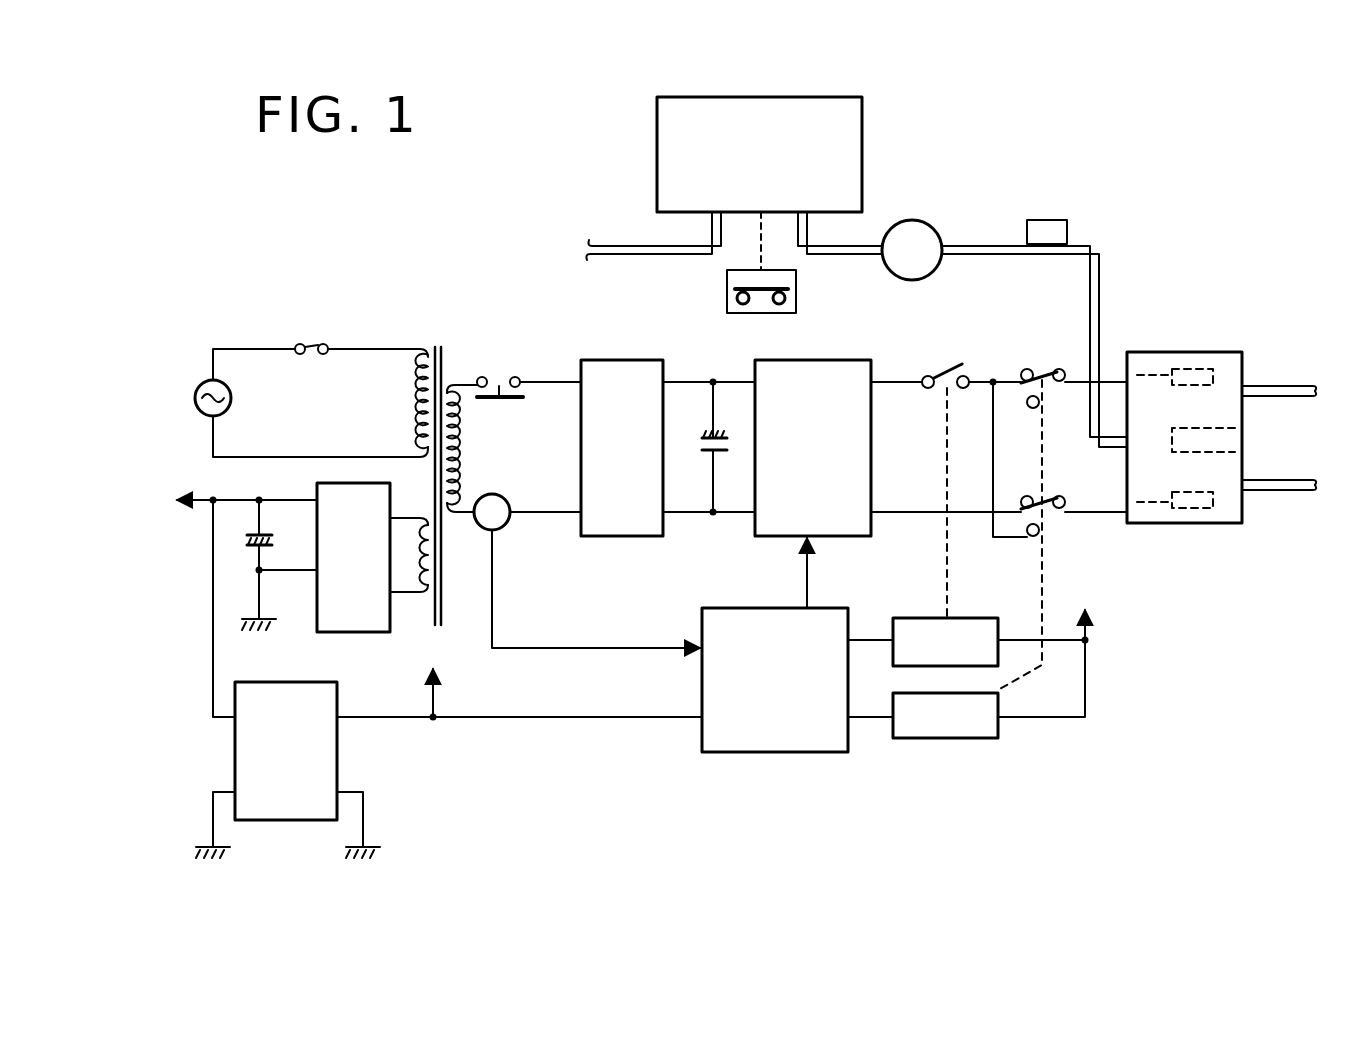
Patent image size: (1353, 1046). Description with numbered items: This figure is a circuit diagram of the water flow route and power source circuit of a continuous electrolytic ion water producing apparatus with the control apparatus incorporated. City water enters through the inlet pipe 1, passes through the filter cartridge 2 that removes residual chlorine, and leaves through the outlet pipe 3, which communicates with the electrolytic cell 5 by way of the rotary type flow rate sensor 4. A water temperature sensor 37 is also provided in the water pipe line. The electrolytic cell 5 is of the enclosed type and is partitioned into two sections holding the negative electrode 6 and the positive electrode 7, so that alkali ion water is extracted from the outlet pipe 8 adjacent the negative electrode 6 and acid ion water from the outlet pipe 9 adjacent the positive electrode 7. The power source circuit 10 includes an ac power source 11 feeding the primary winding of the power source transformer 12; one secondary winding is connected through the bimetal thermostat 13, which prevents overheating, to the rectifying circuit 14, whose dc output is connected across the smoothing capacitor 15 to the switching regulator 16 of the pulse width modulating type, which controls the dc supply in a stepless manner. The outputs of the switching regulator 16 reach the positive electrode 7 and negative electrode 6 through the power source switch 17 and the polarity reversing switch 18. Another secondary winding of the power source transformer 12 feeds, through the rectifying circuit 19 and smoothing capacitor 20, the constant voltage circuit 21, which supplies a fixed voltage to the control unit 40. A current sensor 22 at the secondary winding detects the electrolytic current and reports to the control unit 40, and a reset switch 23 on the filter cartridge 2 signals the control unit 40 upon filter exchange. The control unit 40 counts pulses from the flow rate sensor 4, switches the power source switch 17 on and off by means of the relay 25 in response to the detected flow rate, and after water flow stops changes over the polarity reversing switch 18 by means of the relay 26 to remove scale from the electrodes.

The inlet pipe 1 is at (622, 248).
The filter cartridge 2 is at (862, 110).
The outlet pipe 3 is at (818, 258).
The flow rate sensor 4 is at (920, 224).
The electrolytic cell 5 is at (1141, 352).
The negative electrode 6 is at (1203, 507).
The positive electrode 7 is at (1203, 370).
The outlet pipe for alkali ion water 8 is at (1277, 480).
The outlet pipe for acid ion water 9 is at (1284, 386).
The power source circuit 10 is at (737, 360).
The ac power source 11 is at (197, 393).
The power source transformer 12 is at (440, 347).
The bimetal thermostat 13 is at (490, 378).
The rectifying circuit 14 is at (627, 360).
The smoothing capacitor 15 is at (705, 437).
The switching regulator 16 is at (843, 360).
The power source switch 17 is at (949, 372).
The polarity reversing switch 18 is at (1040, 375).
The rectifying circuit 19 is at (368, 632).
The smoothing capacitor 20 is at (247, 541).
The constant voltage circuit 21 is at (337, 752).
The current sensor 22 is at (506, 526).
The reset switch 23 is at (727, 295).
The relay 25 is at (970, 618).
The relay 26 is at (962, 738).
The water temperature sensor 37 is at (1057, 220).
The control unit 40 is at (730, 608).